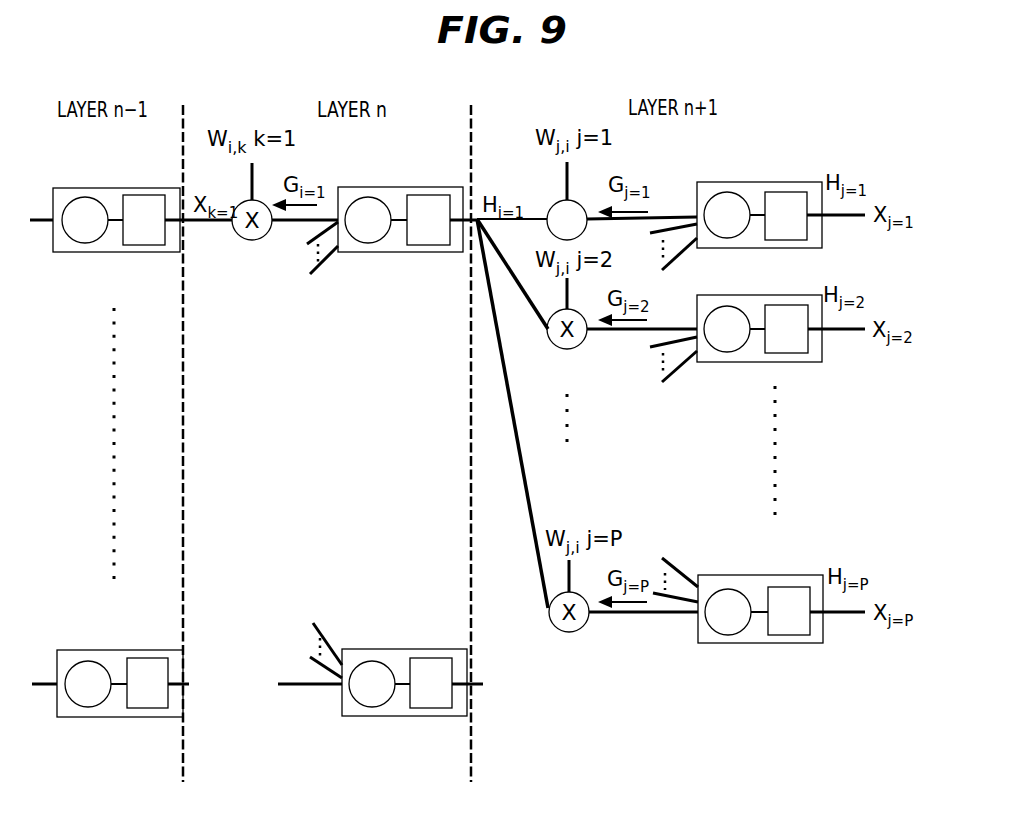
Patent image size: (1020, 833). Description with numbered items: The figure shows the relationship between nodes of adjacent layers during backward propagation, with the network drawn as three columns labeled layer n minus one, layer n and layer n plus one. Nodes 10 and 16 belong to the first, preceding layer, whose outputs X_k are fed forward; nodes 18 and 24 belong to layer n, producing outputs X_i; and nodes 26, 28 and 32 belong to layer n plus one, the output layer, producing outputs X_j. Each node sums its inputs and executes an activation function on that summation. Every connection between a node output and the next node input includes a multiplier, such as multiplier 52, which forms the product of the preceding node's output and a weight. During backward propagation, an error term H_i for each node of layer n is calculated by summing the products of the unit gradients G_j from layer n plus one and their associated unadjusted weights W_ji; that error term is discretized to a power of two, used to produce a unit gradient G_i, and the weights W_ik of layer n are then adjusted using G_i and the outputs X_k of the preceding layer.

The node 10 is at (118, 188).
The node 16 is at (118, 650).
The node 18 is at (402, 187).
The node 24 is at (402, 649).
The node 26 is at (757, 182).
The node 28 is at (757, 295).
The node 32 is at (757, 575).
The multiplier 52 is at (552, 202).